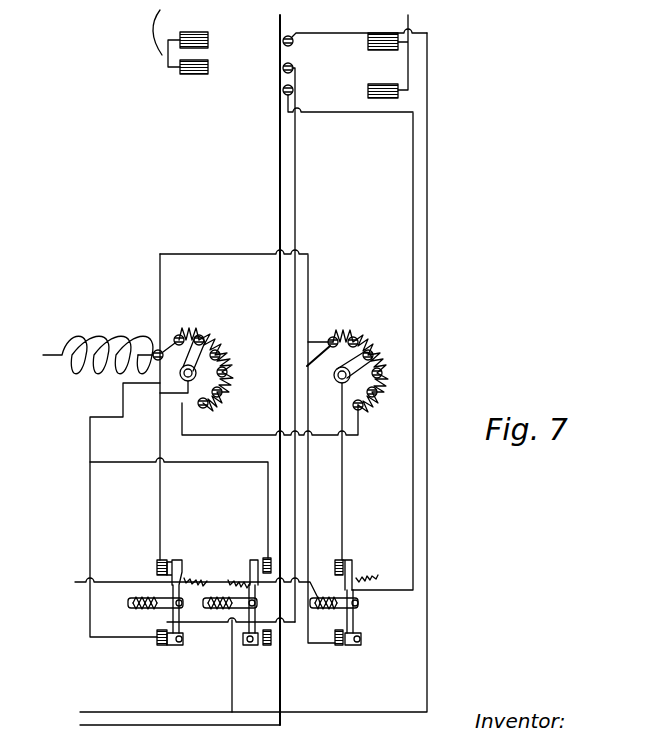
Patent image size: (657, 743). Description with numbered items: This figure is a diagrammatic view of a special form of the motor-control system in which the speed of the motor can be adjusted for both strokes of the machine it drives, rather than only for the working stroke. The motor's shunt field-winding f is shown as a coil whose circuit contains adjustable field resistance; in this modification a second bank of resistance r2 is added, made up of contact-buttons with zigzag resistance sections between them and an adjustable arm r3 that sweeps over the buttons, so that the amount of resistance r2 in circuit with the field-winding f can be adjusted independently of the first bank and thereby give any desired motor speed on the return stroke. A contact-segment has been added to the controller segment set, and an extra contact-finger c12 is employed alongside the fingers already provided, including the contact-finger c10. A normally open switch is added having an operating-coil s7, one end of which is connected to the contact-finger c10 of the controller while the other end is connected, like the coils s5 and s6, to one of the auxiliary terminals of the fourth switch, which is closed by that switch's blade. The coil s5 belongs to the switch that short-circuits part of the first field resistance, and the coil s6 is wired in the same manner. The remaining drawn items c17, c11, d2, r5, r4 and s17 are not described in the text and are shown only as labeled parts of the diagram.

The coil pair c17 is at (156, 42).
The contact-finger c10 is at (296, 44).
The contact terminal c11 is at (295, 70).
The contact-finger c12 is at (295, 92).
The coil d2 is at (416, 56).
The shunt field-winding f is at (110, 338).
The resistance contacts r5 is at (228, 350).
The rheostat arm r4 is at (219, 373).
The second bank of resistance r2 is at (369, 340).
The adjustable arm r3 is at (358, 362).
The coil s5 is at (182, 525).
The coil s6 is at (128, 614).
The relay contact s17 is at (346, 556).
The operating-coil s7 is at (362, 606).